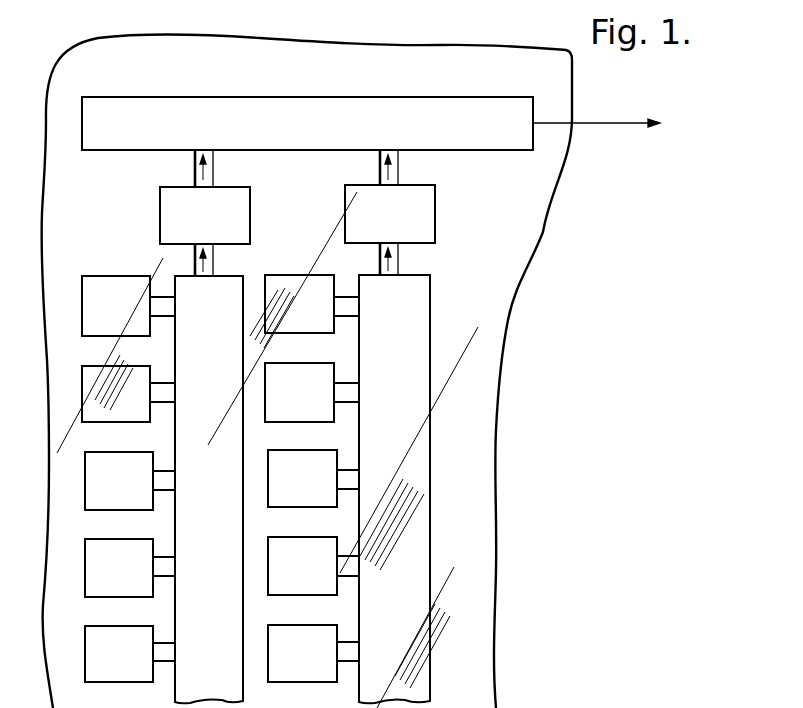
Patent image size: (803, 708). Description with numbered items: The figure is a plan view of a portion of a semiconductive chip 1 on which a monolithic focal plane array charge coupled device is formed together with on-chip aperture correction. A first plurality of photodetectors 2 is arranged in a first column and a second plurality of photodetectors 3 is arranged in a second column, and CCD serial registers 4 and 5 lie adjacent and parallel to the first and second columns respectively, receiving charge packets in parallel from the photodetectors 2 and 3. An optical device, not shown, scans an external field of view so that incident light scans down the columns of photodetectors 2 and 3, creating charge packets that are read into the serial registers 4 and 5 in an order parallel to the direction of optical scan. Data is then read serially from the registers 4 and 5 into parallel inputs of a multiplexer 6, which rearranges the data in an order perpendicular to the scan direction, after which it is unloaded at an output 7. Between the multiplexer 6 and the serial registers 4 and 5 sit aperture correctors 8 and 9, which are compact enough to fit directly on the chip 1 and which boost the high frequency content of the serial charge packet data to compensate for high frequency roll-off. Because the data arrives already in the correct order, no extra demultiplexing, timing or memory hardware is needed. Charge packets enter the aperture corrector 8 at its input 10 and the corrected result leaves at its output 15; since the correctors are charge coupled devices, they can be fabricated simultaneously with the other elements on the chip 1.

The semiconductive chip 1 is at (543, 233).
The first plurality of photodetectors 2 is at (82, 277).
The second plurality of photodetectors 3 is at (330, 277).
The CCD serial register 4 is at (217, 490).
The CCD serial register 5 is at (429, 276).
The multiplexer 6 is at (92, 97).
The output 7 is at (594, 123).
The aperture corrector 8 is at (160, 188).
The aperture corrector 9 is at (437, 186).
The input of the aperture corrector 10 is at (195, 263).
The output of the aperture corrector 15 is at (208, 180).